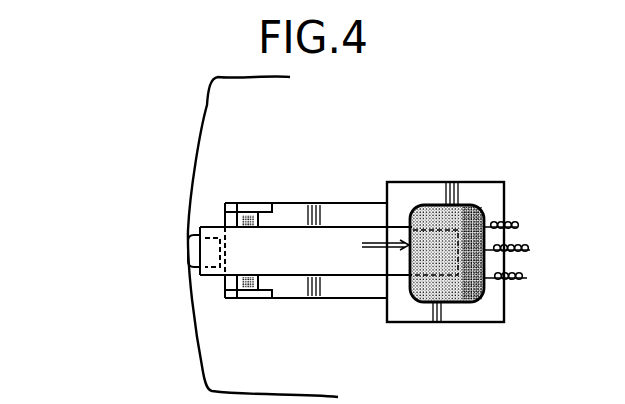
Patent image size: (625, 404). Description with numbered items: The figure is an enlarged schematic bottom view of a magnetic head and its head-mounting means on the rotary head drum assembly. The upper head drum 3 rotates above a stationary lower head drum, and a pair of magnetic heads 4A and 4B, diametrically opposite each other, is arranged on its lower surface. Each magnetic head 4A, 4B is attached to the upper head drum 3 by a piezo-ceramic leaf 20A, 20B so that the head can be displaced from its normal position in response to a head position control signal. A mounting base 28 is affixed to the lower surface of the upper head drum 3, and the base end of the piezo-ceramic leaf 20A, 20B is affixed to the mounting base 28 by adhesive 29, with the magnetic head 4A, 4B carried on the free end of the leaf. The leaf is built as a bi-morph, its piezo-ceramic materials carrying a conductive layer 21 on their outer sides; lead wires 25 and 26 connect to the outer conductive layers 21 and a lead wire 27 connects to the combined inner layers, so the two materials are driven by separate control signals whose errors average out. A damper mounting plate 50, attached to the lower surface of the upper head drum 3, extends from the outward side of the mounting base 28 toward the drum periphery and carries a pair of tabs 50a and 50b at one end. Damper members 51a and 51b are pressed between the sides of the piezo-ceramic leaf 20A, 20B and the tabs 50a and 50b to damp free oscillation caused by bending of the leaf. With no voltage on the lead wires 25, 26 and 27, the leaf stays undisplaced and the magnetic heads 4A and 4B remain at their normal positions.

The upper head drum 3 is at (200, 354).
The magnetic head 4A is at (161, 273).
The magnetic head 4B is at (190, 255).
The piezo-ceramic leaf 20A is at (329, 232).
The piezo-ceramic leaf 20B is at (329, 232).
The conductive layer 21 is at (334, 268).
The lead wire 25 is at (527, 278).
The lead wire 26 is at (517, 227).
The lead wire 27 is at (530, 250).
The mounting base 28 is at (435, 188).
The adhesive 29 is at (470, 207).
The damper mounting plate 50 is at (332, 210).
The tab 50a is at (267, 298).
The tab 50b is at (260, 207).
The damper member 51a is at (232, 300).
The damper member 51b is at (230, 203).